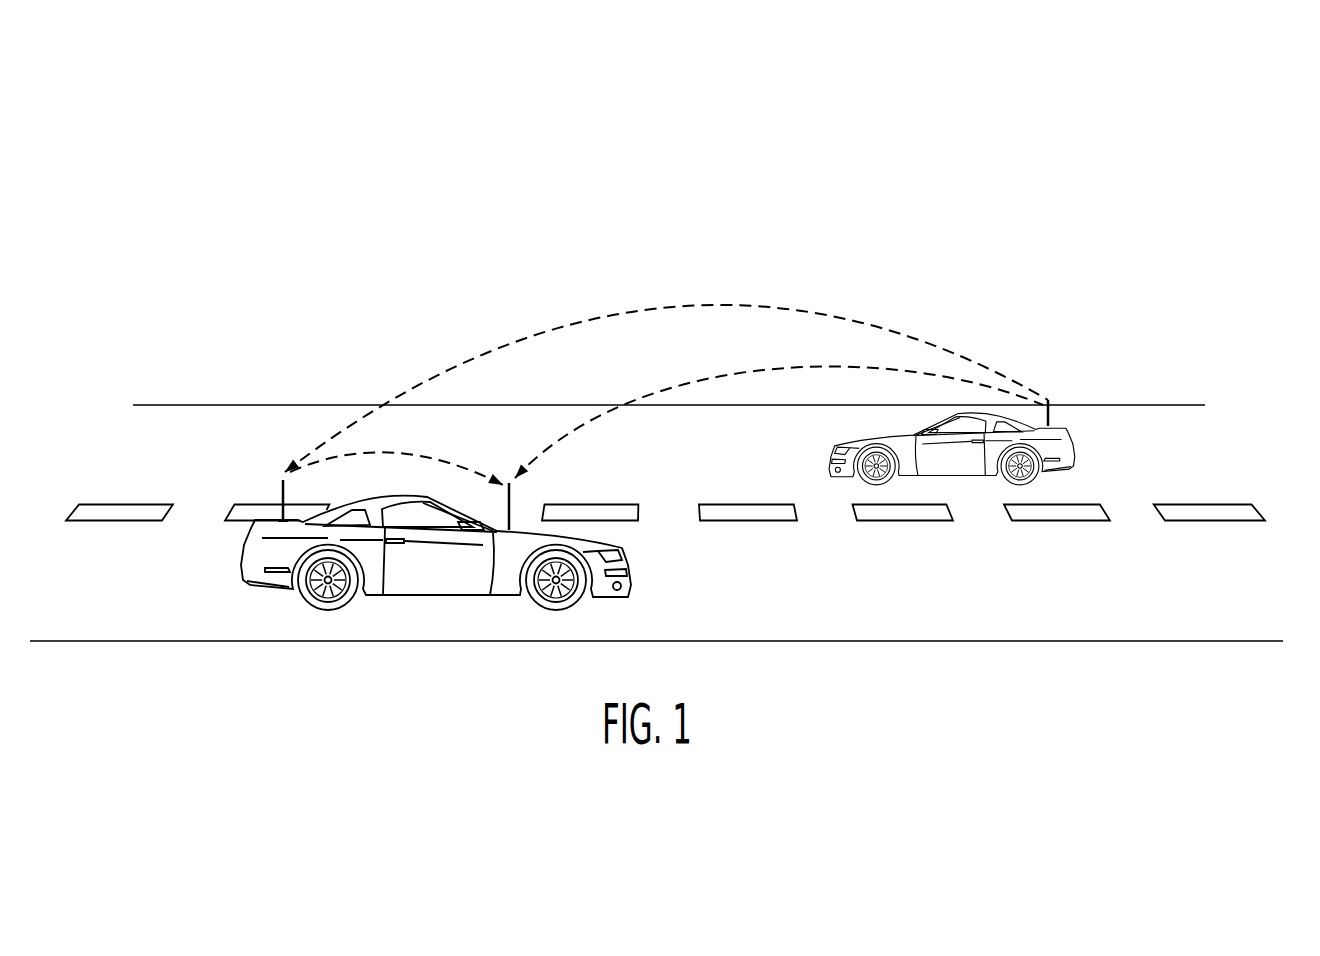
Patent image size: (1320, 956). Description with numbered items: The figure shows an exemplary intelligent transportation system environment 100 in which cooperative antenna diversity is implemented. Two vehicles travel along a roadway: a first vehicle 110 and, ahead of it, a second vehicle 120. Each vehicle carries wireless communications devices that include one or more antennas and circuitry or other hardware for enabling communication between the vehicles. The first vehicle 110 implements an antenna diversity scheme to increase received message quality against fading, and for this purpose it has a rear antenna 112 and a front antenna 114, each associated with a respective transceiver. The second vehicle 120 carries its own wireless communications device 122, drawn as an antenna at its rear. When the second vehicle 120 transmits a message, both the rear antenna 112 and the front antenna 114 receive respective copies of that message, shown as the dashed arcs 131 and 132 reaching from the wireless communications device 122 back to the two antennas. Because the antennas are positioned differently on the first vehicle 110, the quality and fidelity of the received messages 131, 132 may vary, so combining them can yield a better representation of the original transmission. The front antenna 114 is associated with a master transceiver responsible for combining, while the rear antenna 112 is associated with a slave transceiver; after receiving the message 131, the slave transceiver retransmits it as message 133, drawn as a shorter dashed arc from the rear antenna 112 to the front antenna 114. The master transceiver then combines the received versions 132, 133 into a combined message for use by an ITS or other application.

The intelligent transportation system environment 100 is at (220, 195).
The first vehicle 110 is at (630, 583).
The rear antenna 112 is at (280, 484).
The front antenna 114 is at (513, 496).
The second vehicle 120 is at (1077, 456).
The wireless communications device 122 is at (1050, 402).
The message copy received at rear antenna 131 is at (626, 309).
The message copy received at front antenna 132 is at (688, 386).
The retransmitted message 133 is at (461, 466).